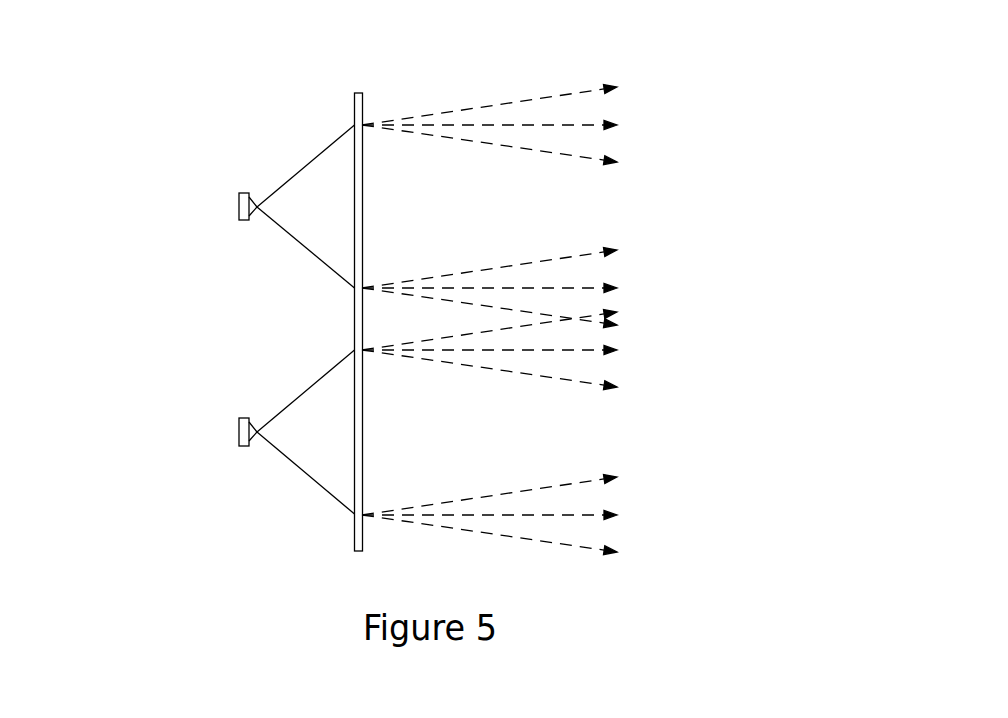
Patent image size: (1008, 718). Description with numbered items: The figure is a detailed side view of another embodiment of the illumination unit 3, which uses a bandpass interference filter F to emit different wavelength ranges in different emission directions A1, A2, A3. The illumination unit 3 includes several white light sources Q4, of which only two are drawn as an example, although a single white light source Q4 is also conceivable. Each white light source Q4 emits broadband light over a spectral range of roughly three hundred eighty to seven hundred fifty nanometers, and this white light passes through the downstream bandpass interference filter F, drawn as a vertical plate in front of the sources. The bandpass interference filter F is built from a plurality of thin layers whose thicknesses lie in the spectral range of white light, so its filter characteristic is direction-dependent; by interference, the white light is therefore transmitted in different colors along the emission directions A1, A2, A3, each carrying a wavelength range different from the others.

The illumination unit 3 is at (250, 66).
The white light source Q4 is at (239, 207).
The bandpass interference filter F is at (363, 207).
The emission direction A1 is at (581, 88).
The emission direction A2 is at (579, 126).
The emission direction A3 is at (579, 160).